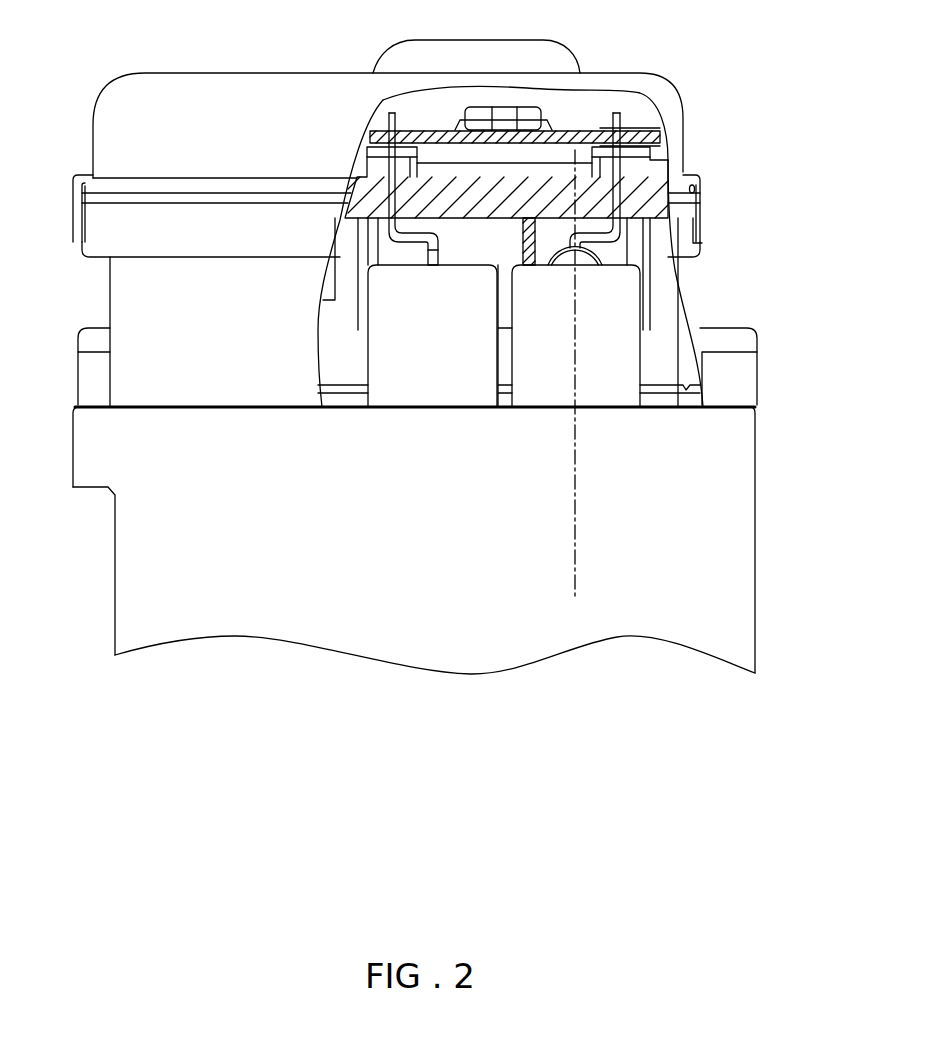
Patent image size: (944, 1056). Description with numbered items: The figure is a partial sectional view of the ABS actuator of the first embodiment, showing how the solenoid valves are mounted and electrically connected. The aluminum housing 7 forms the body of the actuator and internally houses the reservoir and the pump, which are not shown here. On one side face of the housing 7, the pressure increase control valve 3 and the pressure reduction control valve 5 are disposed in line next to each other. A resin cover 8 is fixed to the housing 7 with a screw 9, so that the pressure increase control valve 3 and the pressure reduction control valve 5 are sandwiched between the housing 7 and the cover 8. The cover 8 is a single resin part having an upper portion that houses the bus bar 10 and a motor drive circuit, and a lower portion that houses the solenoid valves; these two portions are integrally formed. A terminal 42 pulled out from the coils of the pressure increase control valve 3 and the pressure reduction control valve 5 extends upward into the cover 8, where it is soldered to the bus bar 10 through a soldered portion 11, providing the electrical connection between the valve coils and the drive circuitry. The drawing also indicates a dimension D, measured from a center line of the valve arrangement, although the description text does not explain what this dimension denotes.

The pressure increase control valve 3 is at (618, 307).
The pressure reduction control valve 5 is at (395, 305).
The housing 7 is at (725, 531).
The cover 8 is at (668, 166).
The screw 9 is at (88, 335).
The bus bar 10 is at (582, 133).
The soldered portion 11 is at (620, 125).
The terminal 42 is at (390, 114).
The distance D is at (578, 190).